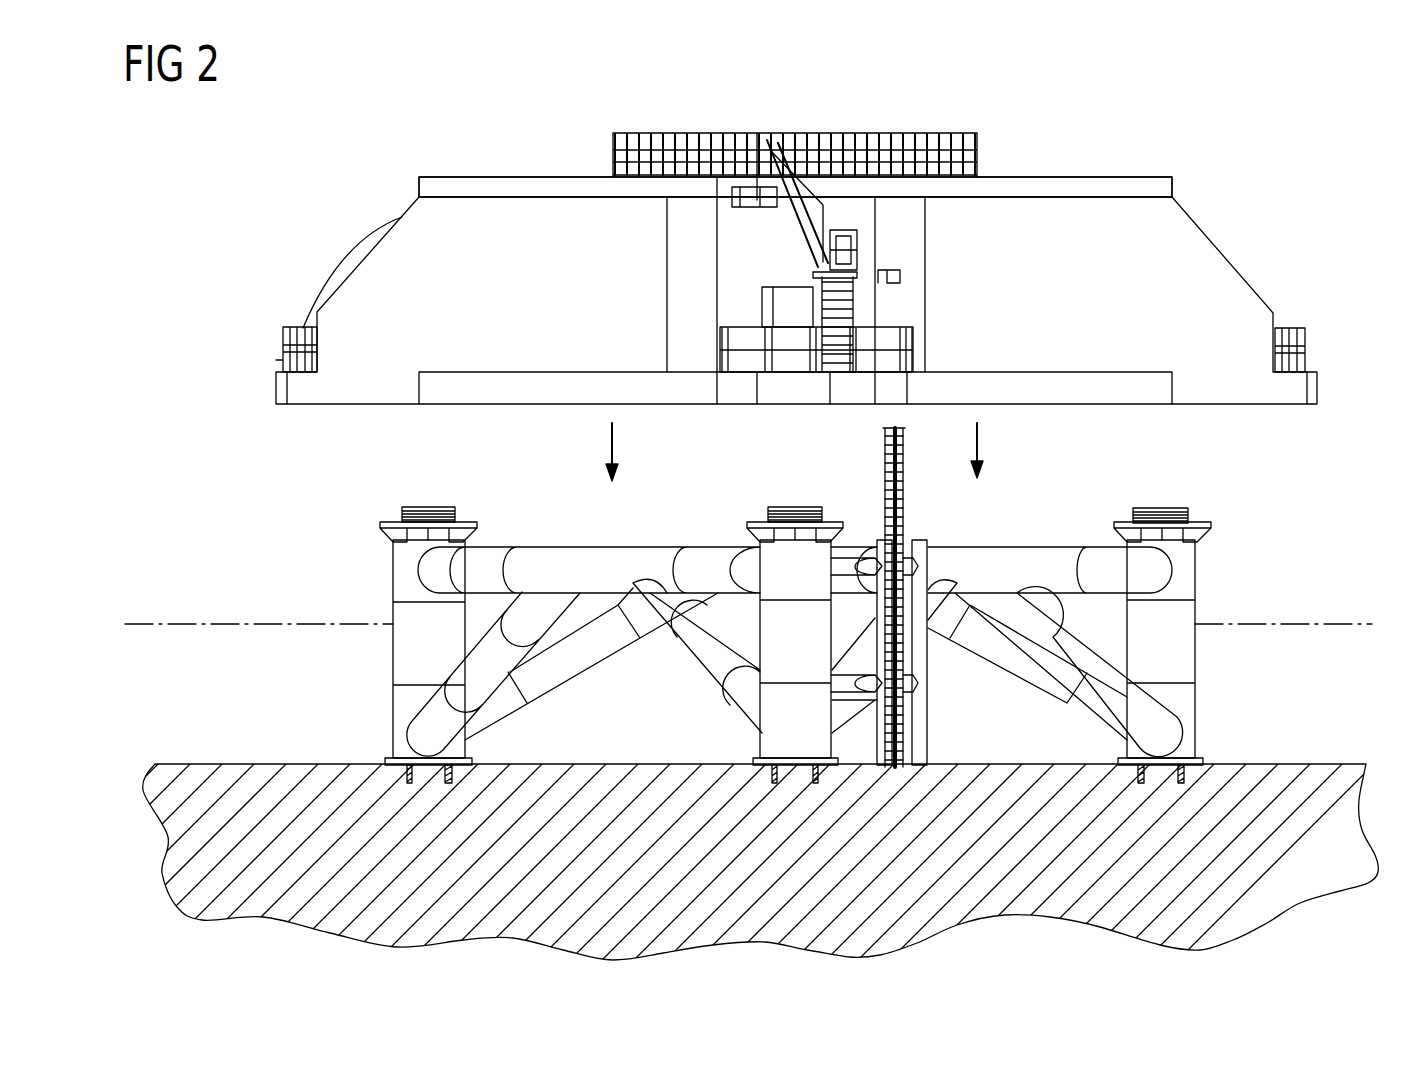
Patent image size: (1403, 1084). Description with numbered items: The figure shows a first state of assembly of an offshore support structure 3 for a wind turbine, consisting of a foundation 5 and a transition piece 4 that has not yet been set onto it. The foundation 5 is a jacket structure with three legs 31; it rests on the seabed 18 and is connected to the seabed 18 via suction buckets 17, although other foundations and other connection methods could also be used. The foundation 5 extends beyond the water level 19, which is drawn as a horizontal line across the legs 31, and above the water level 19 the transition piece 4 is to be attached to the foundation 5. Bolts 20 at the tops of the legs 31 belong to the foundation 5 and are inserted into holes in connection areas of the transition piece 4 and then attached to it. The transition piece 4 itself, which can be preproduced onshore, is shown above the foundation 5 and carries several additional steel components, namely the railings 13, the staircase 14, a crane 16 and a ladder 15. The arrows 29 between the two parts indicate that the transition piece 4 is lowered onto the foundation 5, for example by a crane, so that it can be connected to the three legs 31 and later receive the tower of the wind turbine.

The offshore support structure 3 is at (186, 376).
The transition piece 4 is at (1120, 187).
The foundation 5 is at (1197, 580).
The railings 13 is at (963, 133).
The staircase 14 is at (787, 220).
The ladder 15 is at (903, 737).
The crane 16 is at (888, 268).
The suction buckets 17 is at (384, 777).
The seabed 18 is at (215, 773).
The water level 19 is at (180, 623).
The bolts 20 is at (402, 517).
The arrows 29 is at (980, 443).
The legs 31 is at (1187, 648).